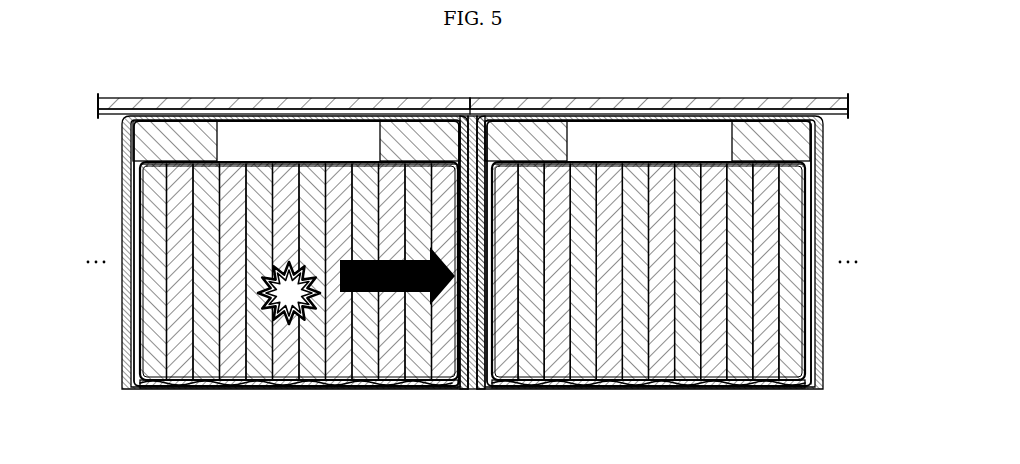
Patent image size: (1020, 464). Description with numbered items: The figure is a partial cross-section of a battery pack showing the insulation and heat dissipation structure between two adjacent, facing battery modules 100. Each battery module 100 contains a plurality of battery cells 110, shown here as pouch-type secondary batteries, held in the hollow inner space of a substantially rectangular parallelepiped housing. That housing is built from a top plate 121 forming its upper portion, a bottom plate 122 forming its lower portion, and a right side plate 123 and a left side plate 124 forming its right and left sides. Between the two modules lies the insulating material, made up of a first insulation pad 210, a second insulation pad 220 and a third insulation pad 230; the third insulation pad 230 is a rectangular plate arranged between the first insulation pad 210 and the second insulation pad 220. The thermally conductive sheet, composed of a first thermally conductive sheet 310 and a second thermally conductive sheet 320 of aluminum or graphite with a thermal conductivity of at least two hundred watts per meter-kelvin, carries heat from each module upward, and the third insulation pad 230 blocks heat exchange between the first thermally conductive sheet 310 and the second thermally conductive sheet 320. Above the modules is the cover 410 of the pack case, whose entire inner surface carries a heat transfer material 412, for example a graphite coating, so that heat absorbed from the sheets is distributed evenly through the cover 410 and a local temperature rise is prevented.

The battery module 100 is at (188, 394).
The battery cell 110 is at (283, 362).
The top plate 121 is at (282, 160).
The bottom plate 122 is at (232, 387).
The right side plate 123 is at (453, 320).
The left side plate 124 is at (137, 333).
The first insulation pad 210 is at (461, 389).
The second insulation pad 220 is at (487, 389).
The third insulation pad 230 is at (470, 116).
The first thermally conductive sheet 310 is at (418, 110).
The second thermally conductive sheet 320 is at (522, 110).
The cover 410 is at (473, 91).
The heat transfer material 412 is at (803, 113).